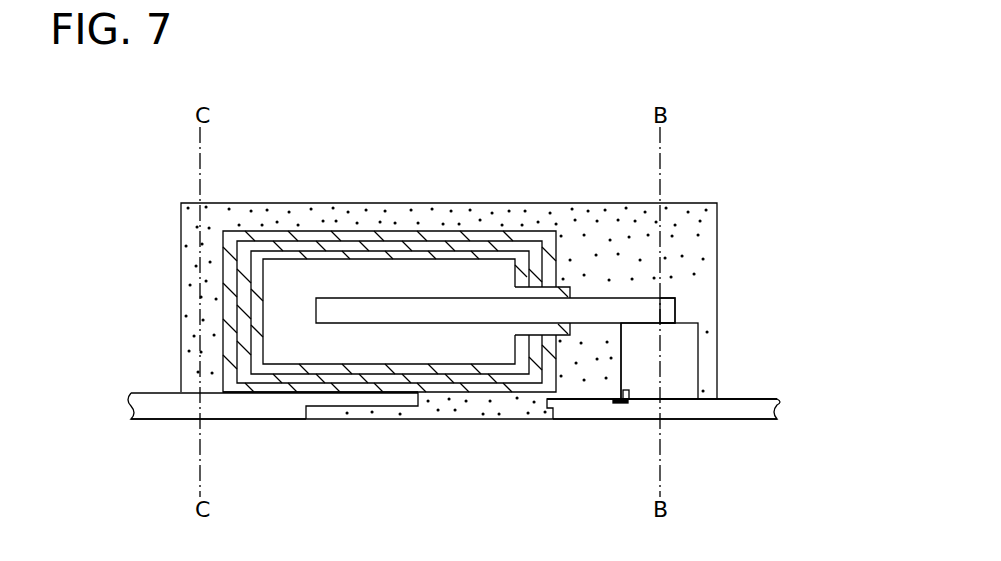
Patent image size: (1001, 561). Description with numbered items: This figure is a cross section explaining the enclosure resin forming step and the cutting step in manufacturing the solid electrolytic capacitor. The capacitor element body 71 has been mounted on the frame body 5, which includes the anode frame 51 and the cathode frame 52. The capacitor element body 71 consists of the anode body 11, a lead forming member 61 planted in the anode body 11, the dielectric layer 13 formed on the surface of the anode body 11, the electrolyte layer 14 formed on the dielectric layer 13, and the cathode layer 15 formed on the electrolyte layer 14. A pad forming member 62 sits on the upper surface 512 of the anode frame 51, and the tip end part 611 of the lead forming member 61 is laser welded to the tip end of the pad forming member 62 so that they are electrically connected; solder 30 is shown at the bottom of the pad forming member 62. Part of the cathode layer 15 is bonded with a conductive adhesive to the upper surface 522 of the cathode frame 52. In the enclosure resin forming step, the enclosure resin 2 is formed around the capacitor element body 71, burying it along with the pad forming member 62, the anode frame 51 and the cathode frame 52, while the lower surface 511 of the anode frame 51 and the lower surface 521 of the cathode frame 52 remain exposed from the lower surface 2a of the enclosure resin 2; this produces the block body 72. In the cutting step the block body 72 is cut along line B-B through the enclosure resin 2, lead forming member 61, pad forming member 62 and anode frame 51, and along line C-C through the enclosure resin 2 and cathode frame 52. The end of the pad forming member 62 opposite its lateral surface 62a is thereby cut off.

The block body 72 is at (180, 202).
The enclosure resin 2 is at (263, 213).
The lower surface of the enclosure resin 2a is at (430, 420).
The capacitor element body 71 is at (497, 243).
The anode body 11 is at (329, 278).
The lead forming member 61 is at (357, 313).
The tip end part of the lead forming member 611 is at (668, 297).
The dielectric layer 13 is at (397, 253).
The electrolyte layer 14 is at (443, 244).
The cathode layer 15 is at (463, 236).
The pad forming member 62 is at (673, 369).
The lateral surface of the pad forming member 62a is at (615, 355).
The solder 30 is at (632, 401).
The frame body 5 is at (740, 422).
The anode frame 51 is at (692, 407).
The lower surface of the anode frame 511 is at (565, 421).
The upper surface of the anode frame 512 is at (602, 400).
The cathode frame 52 is at (167, 407).
The lower surface of the cathode frame 521 is at (243, 421).
The upper surface of the cathode frame 522 is at (287, 387).